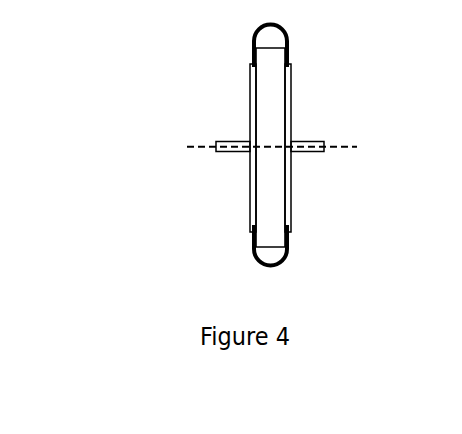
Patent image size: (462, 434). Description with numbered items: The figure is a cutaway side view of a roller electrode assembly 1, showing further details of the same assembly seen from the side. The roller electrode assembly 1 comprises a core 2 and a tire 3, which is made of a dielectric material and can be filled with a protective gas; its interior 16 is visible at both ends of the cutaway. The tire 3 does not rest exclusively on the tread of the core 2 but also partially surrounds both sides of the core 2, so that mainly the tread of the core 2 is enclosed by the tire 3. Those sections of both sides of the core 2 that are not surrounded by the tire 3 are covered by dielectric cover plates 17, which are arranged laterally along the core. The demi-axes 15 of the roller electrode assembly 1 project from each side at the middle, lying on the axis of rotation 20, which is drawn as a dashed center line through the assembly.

The roller electrode assembly 1 is at (190, 217).
The core 2 is at (278, 184).
The tire 3 is at (273, 25).
The demi-axes 15 is at (232, 152).
The interior 16 is at (268, 38).
The dielectric cover plates 17 is at (252, 120).
The axis of rotation 20 is at (357, 146).